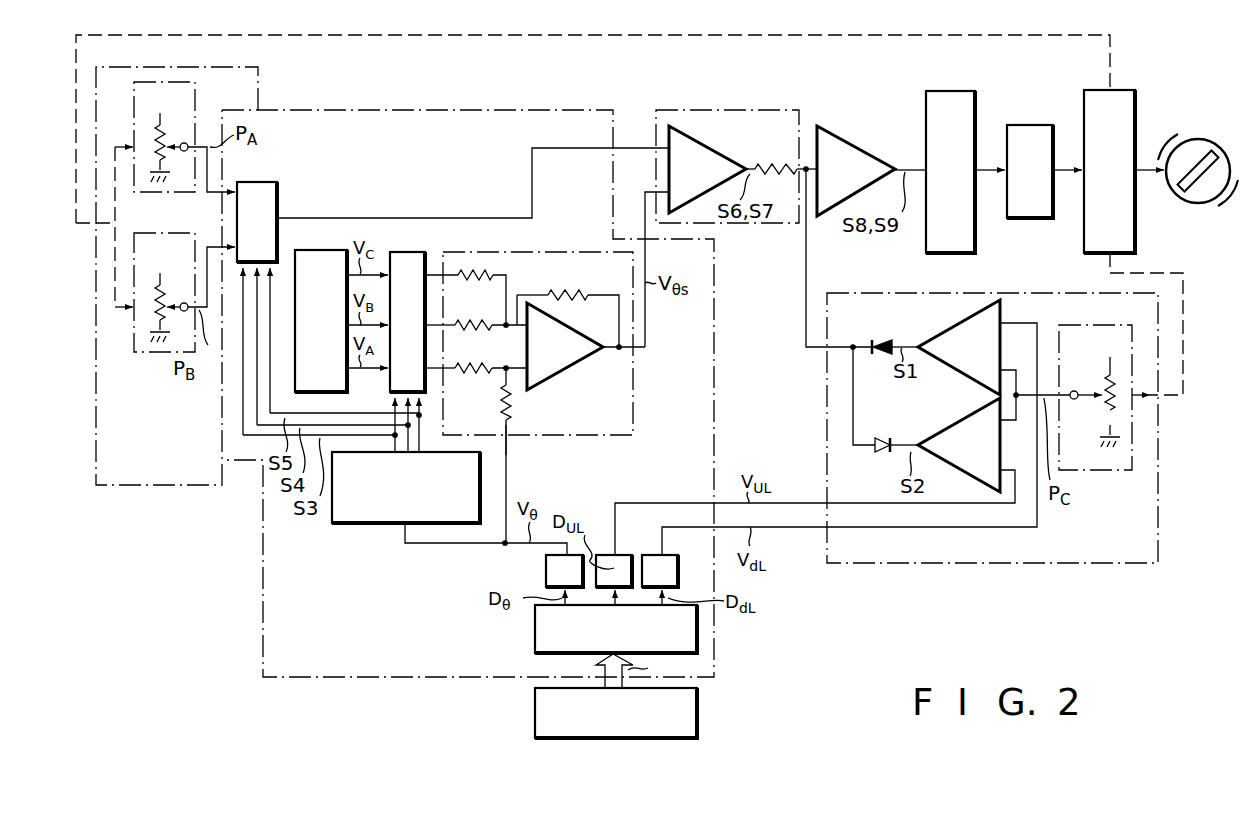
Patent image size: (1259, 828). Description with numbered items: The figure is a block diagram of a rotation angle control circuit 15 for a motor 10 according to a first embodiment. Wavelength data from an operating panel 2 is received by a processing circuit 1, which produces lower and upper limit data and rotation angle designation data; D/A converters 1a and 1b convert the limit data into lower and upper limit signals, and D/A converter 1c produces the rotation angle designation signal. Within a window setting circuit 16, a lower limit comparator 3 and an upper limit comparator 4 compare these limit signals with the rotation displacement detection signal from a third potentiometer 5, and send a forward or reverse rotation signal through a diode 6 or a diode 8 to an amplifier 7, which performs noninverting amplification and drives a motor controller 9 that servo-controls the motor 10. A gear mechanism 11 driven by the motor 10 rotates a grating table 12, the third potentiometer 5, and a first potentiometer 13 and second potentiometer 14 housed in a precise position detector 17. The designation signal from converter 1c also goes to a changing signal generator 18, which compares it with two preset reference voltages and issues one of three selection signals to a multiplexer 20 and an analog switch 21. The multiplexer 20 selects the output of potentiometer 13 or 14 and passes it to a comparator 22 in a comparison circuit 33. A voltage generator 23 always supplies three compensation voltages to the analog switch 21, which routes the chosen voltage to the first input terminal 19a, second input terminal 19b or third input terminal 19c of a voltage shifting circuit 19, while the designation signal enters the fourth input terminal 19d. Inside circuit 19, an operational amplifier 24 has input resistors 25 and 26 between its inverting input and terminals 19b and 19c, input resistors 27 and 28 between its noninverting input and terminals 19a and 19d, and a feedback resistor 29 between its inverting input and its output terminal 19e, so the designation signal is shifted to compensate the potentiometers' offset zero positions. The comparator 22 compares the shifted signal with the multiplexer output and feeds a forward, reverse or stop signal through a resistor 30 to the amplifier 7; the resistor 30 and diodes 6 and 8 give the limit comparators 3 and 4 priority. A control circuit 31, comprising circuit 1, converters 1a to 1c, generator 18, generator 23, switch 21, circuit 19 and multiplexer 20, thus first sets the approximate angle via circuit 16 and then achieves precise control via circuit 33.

The processing circuit 1 is at (698, 636).
The D/A converter 1a is at (678, 566).
The D/A converter 1b is at (631, 554).
The D/A converter 1c is at (545, 568).
The operating panel 2 is at (698, 718).
The lower limit comparator 3 is at (956, 372).
The upper limit comparator 4 is at (936, 437).
The third potentiometer 5 is at (1097, 470).
The diode 6 is at (885, 340).
The amplifier 7 is at (842, 140).
The diode 8 is at (884, 452).
The motor controller 9 is at (950, 91).
The motor 10 is at (1025, 124).
The gear mechanism 11 is at (1088, 90).
The grating table 12 is at (1198, 203).
The first potentiometer 13 is at (195, 94).
The second potentiometer 14 is at (145, 352).
The rotation angle control circuit 15 is at (974, 26).
The window setting circuit 16 is at (976, 563).
The precise position detector 17 is at (150, 485).
The changing signal generator 18 is at (352, 523).
The voltage shifting circuit 19 is at (605, 435).
The first input terminal 19a is at (441, 369).
The second input terminal 19b is at (441, 326).
The third input terminal 19c is at (437, 274).
The fourth input terminal 19d is at (508, 437).
The output terminal 19e is at (646, 347).
The multiplexer 20 is at (278, 186).
The analog switch 21 is at (407, 251).
The comparator 22 is at (716, 160).
The voltage generator 23 is at (335, 250).
The operational amplifier 24 is at (576, 364).
The input resistor 25 is at (472, 322).
The input resistor 26 is at (476, 272).
The input resistor 27 is at (497, 322).
The input resistor 28 is at (511, 402).
The feedback resistor 29 is at (575, 292).
The resistor 30 is at (768, 166).
The control circuit 31 is at (383, 677).
The comparison circuit 33 is at (706, 110).